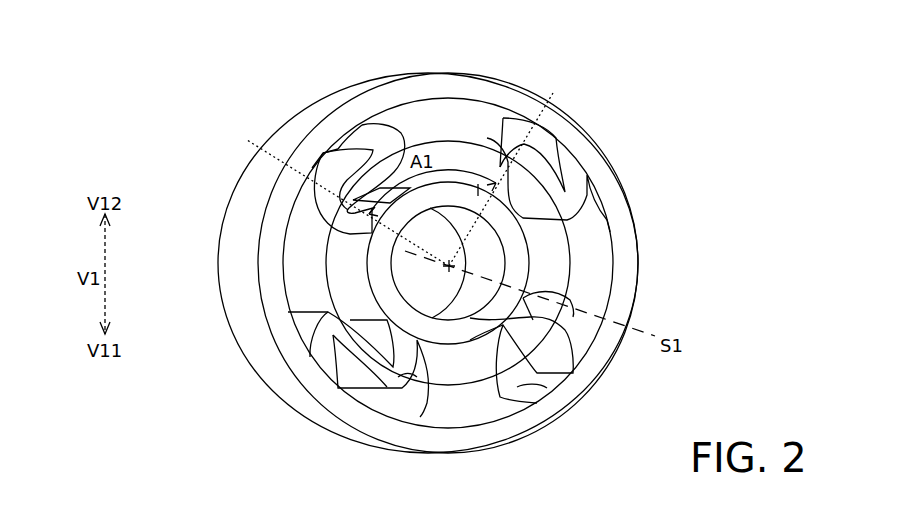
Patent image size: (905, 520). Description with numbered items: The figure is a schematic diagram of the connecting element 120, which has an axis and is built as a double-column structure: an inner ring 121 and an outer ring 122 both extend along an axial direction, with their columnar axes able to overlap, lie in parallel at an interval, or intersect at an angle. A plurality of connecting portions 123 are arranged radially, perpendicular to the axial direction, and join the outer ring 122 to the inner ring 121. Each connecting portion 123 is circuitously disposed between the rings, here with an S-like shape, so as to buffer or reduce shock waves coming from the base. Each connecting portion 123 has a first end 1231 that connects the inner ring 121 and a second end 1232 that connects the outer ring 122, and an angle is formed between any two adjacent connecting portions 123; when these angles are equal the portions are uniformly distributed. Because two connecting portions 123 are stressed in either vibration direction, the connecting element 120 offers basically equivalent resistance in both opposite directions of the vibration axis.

The connecting element 120 is at (628, 75).
The inner ring 121 is at (518, 260).
The outer ring 122 is at (622, 228).
The connecting portion 123 is at (387, 259).
The first end 1231 is at (373, 232).
The second end 1232 is at (374, 137).